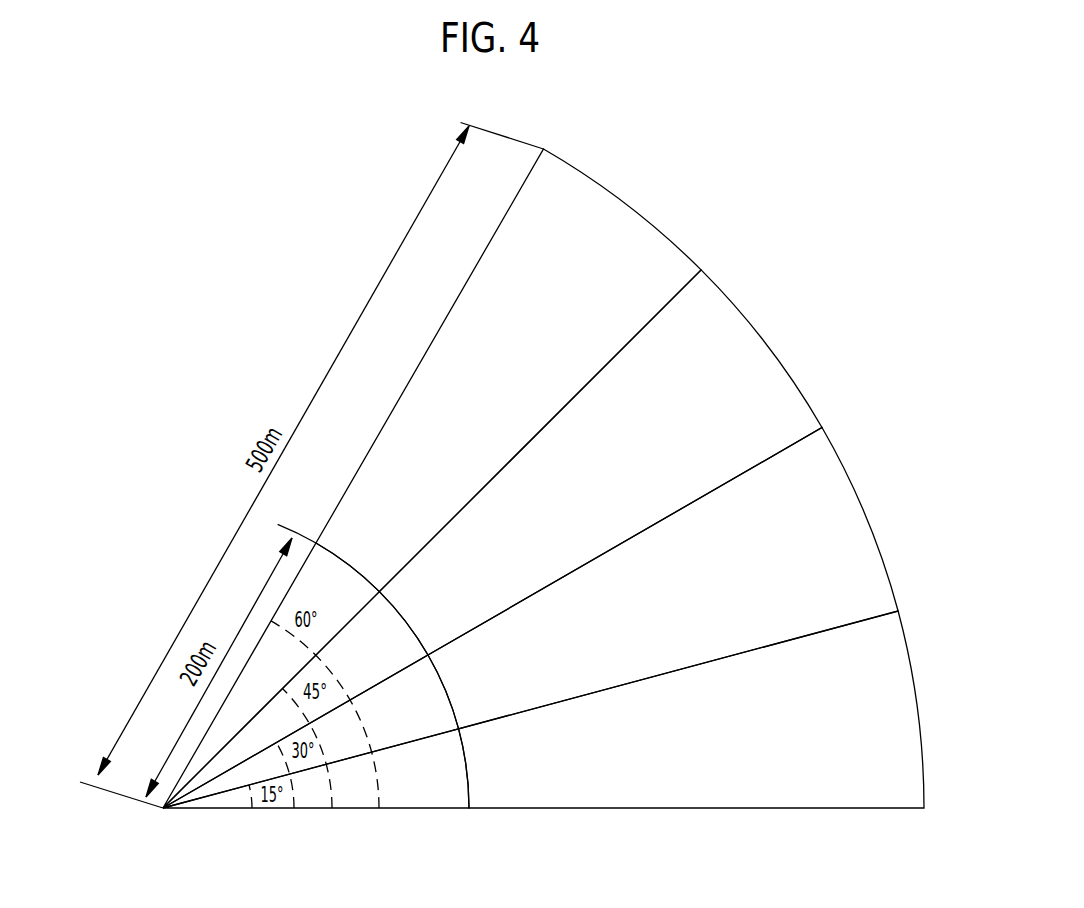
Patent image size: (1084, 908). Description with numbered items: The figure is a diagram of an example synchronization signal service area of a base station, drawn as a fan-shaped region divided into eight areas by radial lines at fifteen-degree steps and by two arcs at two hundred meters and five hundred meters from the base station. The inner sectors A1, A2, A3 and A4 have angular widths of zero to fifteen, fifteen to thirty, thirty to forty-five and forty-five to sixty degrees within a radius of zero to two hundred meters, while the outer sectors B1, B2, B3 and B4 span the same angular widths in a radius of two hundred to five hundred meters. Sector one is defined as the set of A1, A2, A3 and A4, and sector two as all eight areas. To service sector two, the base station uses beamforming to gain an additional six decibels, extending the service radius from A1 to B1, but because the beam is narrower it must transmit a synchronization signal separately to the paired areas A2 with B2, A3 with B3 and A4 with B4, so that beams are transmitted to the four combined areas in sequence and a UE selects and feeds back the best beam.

The sector A1 is at (316, 768).
The sector A2 is at (311, 731).
The sector A3 is at (295, 700).
The sector A4 is at (271, 675).
The sector B1 is at (691, 709).
The sector B2 is at (663, 578).
The sector B3 is at (600, 462).
The sector B4 is at (508, 370).